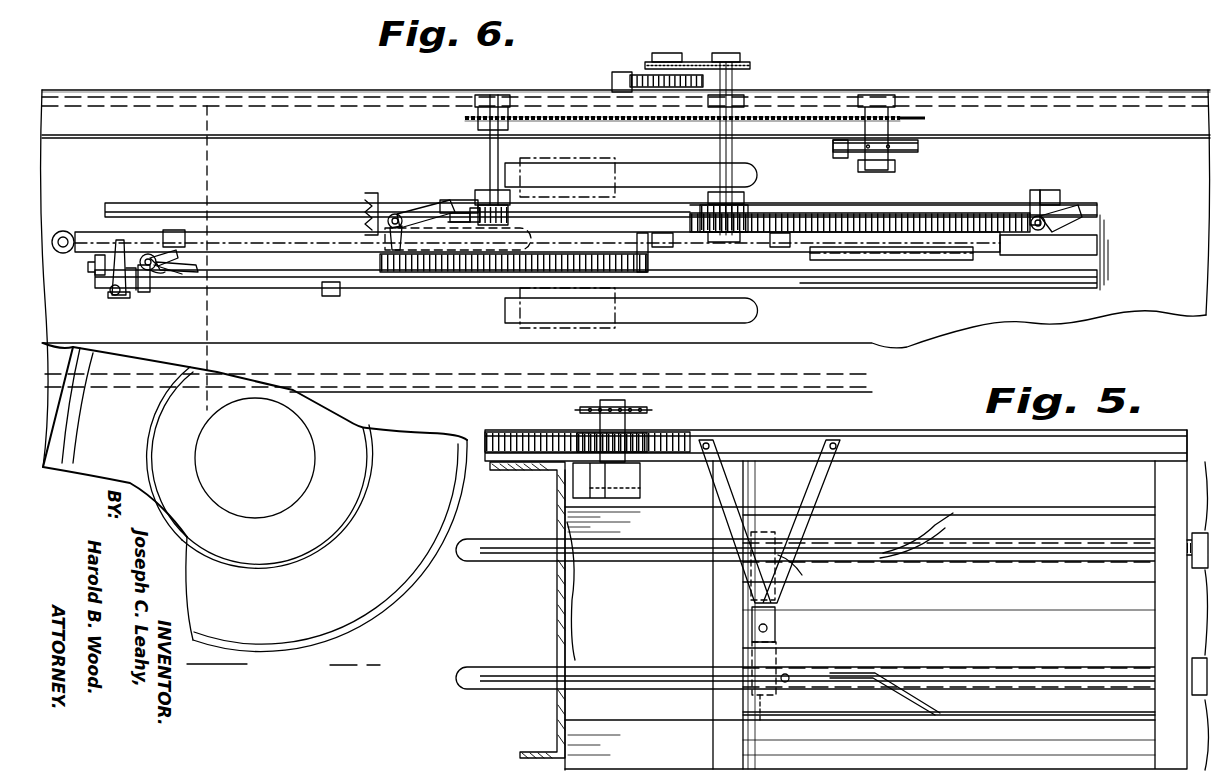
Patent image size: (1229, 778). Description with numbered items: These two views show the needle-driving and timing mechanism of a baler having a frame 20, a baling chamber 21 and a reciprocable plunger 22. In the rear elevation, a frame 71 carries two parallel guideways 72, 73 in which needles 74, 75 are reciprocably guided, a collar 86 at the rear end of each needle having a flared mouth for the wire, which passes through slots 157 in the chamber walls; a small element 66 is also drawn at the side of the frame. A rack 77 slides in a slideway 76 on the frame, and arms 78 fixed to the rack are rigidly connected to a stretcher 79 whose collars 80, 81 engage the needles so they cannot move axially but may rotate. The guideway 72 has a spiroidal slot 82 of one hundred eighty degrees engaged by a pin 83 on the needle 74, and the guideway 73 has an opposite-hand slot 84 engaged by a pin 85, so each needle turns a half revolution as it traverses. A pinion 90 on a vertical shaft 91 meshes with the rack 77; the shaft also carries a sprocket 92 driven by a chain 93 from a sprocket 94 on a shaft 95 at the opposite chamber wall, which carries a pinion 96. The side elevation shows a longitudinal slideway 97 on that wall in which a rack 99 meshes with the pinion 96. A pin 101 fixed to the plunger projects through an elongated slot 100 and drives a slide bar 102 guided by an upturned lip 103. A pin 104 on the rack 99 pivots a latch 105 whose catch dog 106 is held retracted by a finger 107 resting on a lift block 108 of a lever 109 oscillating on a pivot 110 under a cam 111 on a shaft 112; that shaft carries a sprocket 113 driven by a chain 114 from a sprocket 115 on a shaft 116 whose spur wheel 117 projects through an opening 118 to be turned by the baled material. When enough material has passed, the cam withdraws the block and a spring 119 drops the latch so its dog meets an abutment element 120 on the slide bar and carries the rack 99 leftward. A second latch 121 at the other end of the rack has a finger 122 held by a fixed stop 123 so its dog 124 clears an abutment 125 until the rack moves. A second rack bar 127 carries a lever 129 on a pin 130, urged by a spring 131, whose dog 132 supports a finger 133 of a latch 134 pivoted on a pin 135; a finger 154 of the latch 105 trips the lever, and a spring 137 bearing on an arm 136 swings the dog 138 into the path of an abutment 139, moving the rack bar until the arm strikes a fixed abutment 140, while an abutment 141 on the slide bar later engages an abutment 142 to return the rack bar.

In FIG. 6, the frame 20 is at (178, 93).
In FIG. 6, the baling chamber 21 is at (1155, 97).
In FIG. 5, the baling chamber 21 is at (535, 470).
In FIG. 6, the plunger 22 is at (207, 150).
In FIG. 5, the bracket 66 is at (1200, 533).
In FIG. 5, the frame 71 is at (1193, 420).
In FIG. 5, the guideway 72 is at (1047, 512).
In FIG. 5, the guideway 73 is at (1030, 650).
In FIG. 5, the needle 74 is at (650, 561).
In FIG. 5, the needle 75 is at (635, 667).
In FIG. 6, the slideway 76 is at (612, 76).
In FIG. 5, the slideway 76 is at (935, 438).
In FIG. 5, the rack 77 is at (680, 435).
In FIG. 5, the arms 78 is at (838, 478).
In FIG. 5, the stretcher 79 is at (775, 625).
In FIG. 5, the collar 80 is at (763, 532).
In FIG. 5, the collar 81 is at (760, 722).
In FIG. 5, the spiroidal slot 82 is at (953, 513).
In FIG. 5, the pin 83 is at (802, 575).
In FIG. 5, the slot 84 is at (895, 690).
In FIG. 5, the pin 85 is at (788, 675).
In FIG. 5, the collar 86 is at (1198, 658).
In FIG. 6, the pinion 90 is at (640, 75).
In FIG. 5, the pinion 90 is at (647, 445).
In FIG. 5, the shaft 91 is at (640, 488).
In FIG. 6, the sprocket 92 is at (660, 53).
In FIG. 5, the sprocket 92 is at (647, 410).
In FIG. 6, the chain 93 is at (720, 53).
In FIG. 6, the sprocket 94 is at (750, 64).
In FIG. 6, the shaft 95 is at (735, 150).
In FIG. 6, the pinion 96 is at (748, 210).
In FIG. 6, the slideway 97 is at (990, 210).
In FIG. 6, the rack 99 is at (905, 213).
In FIG. 6, the elongated slot 100 is at (280, 252).
In FIG. 6, the pin 101 is at (66, 231).
In FIG. 6, the slide bar 102 is at (278, 193).
In FIG. 6, the upturned lip 103 is at (925, 260).
In FIG. 6, the pin 104 is at (397, 214).
In FIG. 6, the latch 105 is at (430, 208).
In FIG. 6, the catch dog 106 is at (398, 238).
In FIG. 6, the finger 107 is at (455, 200).
In FIG. 6, the lift block 108 is at (462, 213).
In FIG. 6, the lever 109 is at (455, 224).
In FIG. 6, the pivot 110 is at (478, 210).
In FIG. 6, the cam 111 is at (508, 218).
In FIG. 6, the shaft 112 is at (498, 150).
In FIG. 6, the sprocket 113 is at (465, 120).
In FIG. 6, the chain 114 is at (680, 122).
In FIG. 6, the sprocket 115 is at (925, 120).
In FIG. 6, the shaft 116 is at (876, 95).
In FIG. 6, the spur wheel 117 is at (900, 150).
In FIG. 6, the opening 118 is at (840, 158).
In FIG. 6, the spring 119 is at (372, 193).
In FIG. 6, the abutment element 120 is at (172, 230).
In FIG. 6, the second latch 121 is at (1038, 230).
In FIG. 6, the finger 122 is at (1035, 190).
In FIG. 6, the fixed stop 123 is at (1058, 192).
In FIG. 6, the dog 124 is at (1060, 240).
In FIG. 6, the abutment 125 is at (780, 247).
In FIG. 6, the second rack bar 127 is at (400, 272).
In FIG. 6, the lever 129 is at (119, 240).
In FIG. 6, the pin 130 is at (112, 292).
In FIG. 6, the spring 131 is at (95, 268).
In FIG. 6, the dog 132 is at (134, 285).
In FIG. 6, the finger 133 is at (148, 254).
In FIG. 6, the latch 134 is at (162, 268).
In FIG. 6, the pin 135 is at (153, 272).
In FIG. 6, the arm 136 is at (146, 292).
In FIG. 6, the spring 137 is at (118, 298).
In FIG. 6, the dog 138 is at (180, 260).
In FIG. 6, the abutment 139 is at (163, 252).
In FIG. 6, the abutment 140 is at (331, 296).
In FIG. 6, the abutment 141 is at (662, 233).
In FIG. 6, the abutment 142 is at (637, 238).
In FIG. 6, the finger 154 is at (385, 240).
In FIG. 6, the slots 157 is at (665, 180).
In FIG. 5, the slots 157 is at (575, 580).